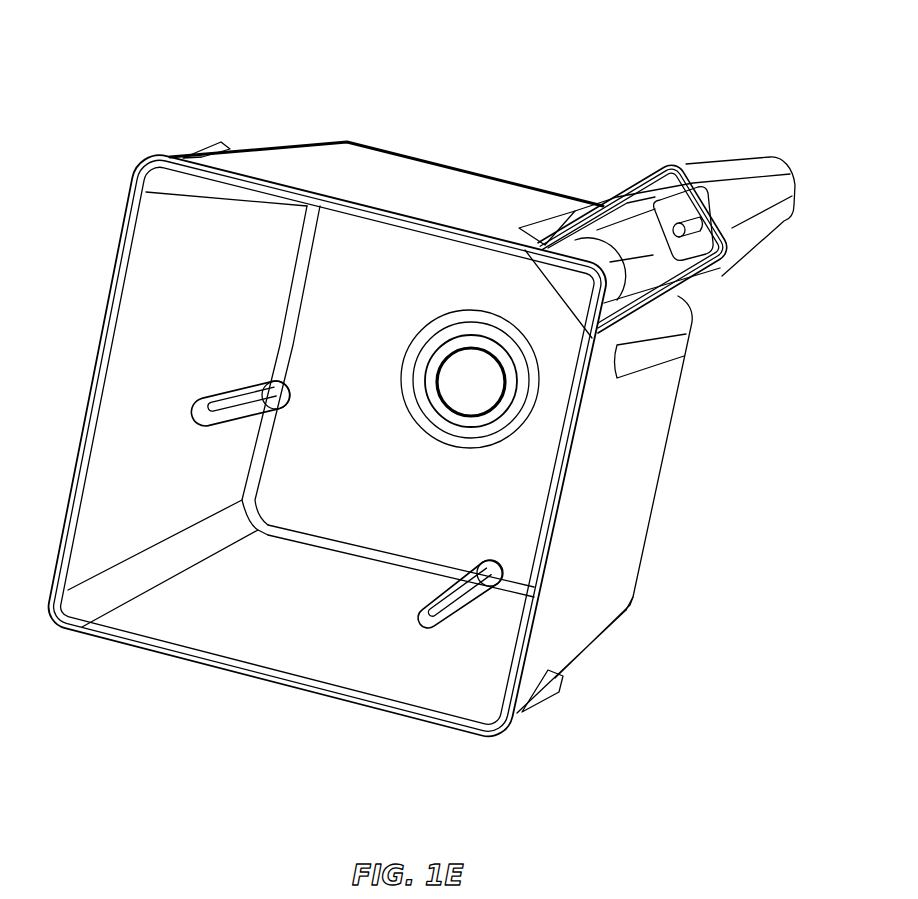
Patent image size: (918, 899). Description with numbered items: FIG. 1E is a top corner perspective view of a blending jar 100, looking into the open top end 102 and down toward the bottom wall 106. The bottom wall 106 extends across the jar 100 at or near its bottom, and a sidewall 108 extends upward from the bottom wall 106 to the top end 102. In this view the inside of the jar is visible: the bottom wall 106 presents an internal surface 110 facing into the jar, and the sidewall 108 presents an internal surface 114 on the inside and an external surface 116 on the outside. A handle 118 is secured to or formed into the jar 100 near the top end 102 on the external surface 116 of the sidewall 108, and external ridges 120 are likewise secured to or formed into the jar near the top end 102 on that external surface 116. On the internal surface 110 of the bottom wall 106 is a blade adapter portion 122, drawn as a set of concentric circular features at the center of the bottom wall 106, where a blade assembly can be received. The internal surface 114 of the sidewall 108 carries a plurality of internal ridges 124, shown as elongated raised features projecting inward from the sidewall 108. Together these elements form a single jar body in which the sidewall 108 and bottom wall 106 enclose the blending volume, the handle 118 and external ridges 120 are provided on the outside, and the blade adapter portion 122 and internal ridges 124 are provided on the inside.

The blending jar 100 is at (140, 114).
The top end 102 is at (54, 639).
The bottom wall 106 is at (410, 298).
The sidewall 108 is at (347, 176).
The internal surface 110 is at (523, 510).
The internal surface 114 is at (138, 404).
The external surface 116 is at (420, 177).
The handle 118 is at (733, 190).
The external ridges 120 is at (207, 147).
The blade adapter portion 122 is at (459, 412).
The internal ridges 124 is at (268, 393).